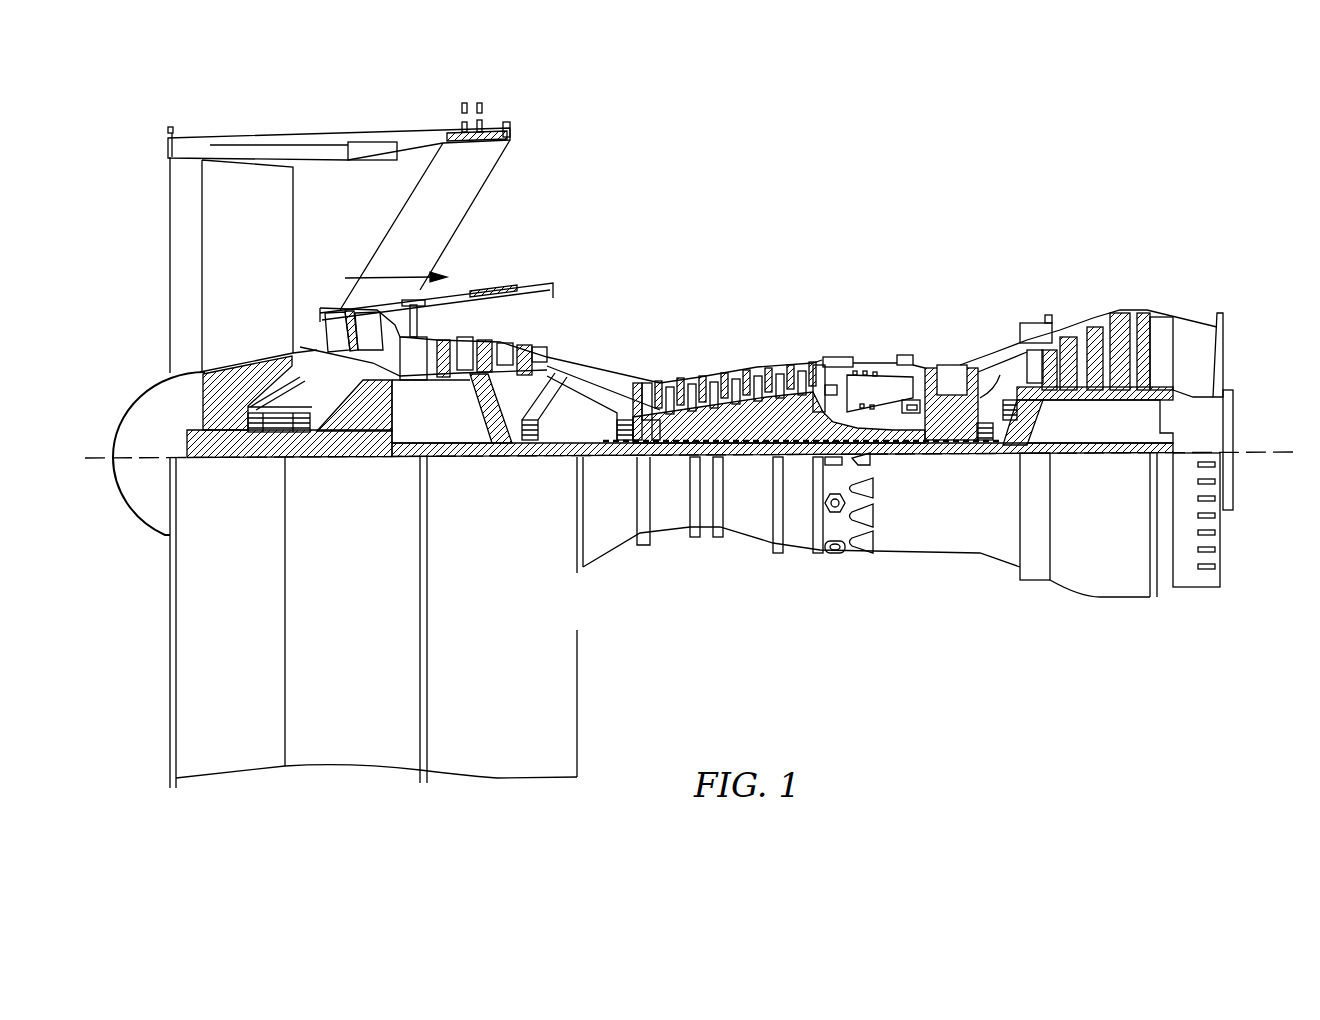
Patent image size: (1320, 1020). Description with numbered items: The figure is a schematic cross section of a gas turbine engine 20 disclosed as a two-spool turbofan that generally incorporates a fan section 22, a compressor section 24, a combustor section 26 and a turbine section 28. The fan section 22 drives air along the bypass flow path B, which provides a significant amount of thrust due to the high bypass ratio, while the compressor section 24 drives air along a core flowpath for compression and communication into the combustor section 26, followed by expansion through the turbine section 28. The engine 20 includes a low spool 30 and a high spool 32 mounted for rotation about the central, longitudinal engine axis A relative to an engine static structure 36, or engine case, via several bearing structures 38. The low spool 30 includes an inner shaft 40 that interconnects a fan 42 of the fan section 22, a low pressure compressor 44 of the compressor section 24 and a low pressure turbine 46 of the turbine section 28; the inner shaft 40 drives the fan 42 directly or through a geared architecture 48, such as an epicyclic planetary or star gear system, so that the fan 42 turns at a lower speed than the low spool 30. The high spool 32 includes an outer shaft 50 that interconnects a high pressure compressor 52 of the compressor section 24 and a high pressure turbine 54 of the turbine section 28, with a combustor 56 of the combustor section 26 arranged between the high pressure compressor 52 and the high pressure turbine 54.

The gas turbine engine 20 is at (913, 170).
The fan section 22 is at (160, 108).
The compressor section 24 is at (430, 258).
The combustor section 26 is at (826, 258).
The turbine section 28 is at (1160, 258).
The low spool 30 is at (753, 468).
The high spool 32 is at (793, 420).
The engine static structure 36 is at (800, 562).
The bearing structures 38 is at (247, 477).
The inner shaft 40 is at (598, 457).
The fan 42 is at (255, 288).
The low pressure compressor 44 is at (500, 350).
The low pressure turbine 46 is at (1097, 315).
The geared architecture 48 is at (377, 432).
The outer shaft 50 is at (870, 437).
The high pressure compressor 52 is at (733, 423).
The high pressure turbine 54 is at (950, 367).
The combustor 56 is at (873, 390).
The engine axis A is at (1277, 452).
The bypass flow path B is at (396, 265).